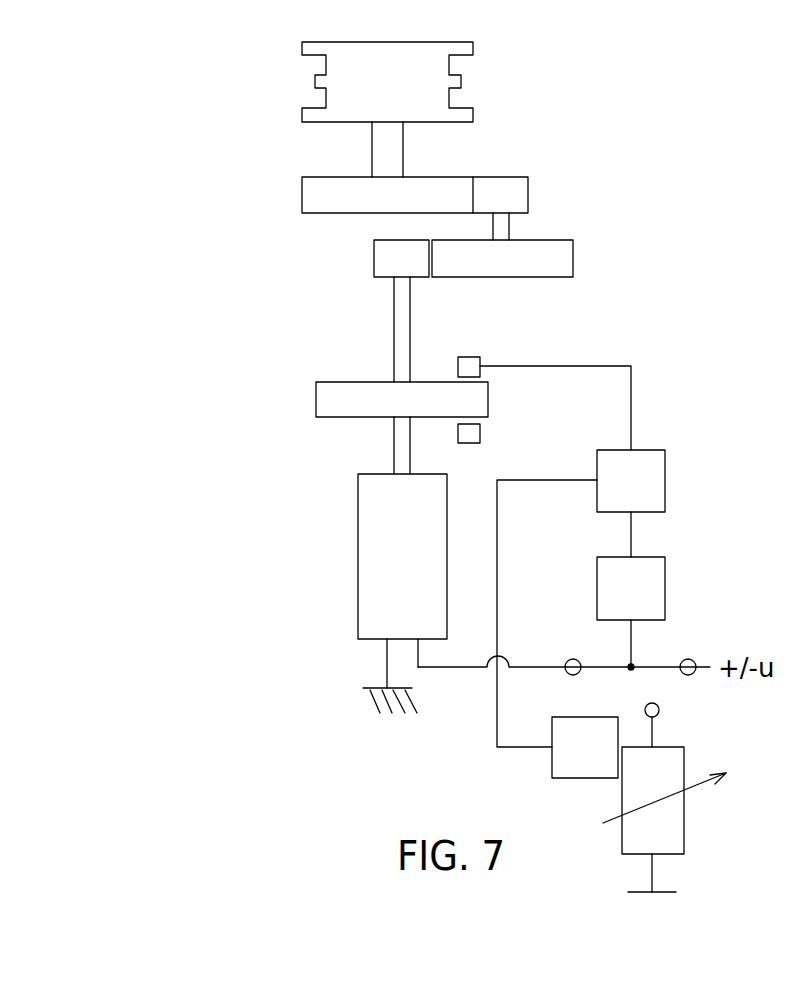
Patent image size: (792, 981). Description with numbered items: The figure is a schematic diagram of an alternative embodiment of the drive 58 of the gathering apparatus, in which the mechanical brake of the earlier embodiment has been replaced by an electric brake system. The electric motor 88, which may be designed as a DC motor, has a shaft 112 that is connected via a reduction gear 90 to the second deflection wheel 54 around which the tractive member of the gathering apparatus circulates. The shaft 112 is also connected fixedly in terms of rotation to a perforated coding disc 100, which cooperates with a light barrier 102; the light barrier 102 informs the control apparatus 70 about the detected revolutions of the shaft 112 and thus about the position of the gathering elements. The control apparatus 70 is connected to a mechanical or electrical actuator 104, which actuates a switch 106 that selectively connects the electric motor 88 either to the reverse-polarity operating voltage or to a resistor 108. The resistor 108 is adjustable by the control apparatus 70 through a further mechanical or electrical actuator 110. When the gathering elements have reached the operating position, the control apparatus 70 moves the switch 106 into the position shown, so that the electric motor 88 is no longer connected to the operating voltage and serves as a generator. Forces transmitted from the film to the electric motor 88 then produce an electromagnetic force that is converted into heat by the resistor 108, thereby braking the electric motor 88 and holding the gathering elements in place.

The second deflection wheel 54 is at (462, 77).
The reduction gear 90 is at (550, 197).
The shaft 112 is at (405, 336).
The perforated coding disc 100 is at (332, 403).
The light barrier 102 is at (488, 350).
The electric motor 88 is at (385, 567).
The drive 58 is at (341, 596).
The switch 106 is at (657, 670).
The control apparatus 70 is at (613, 495).
The actuator 104 is at (606, 601).
The actuator 110 is at (610, 759).
The resistor 108 is at (686, 825).